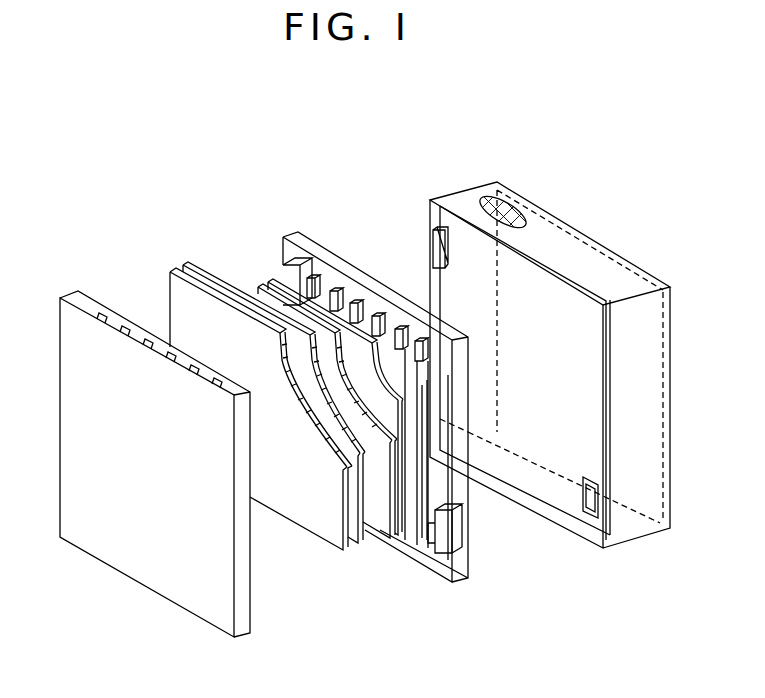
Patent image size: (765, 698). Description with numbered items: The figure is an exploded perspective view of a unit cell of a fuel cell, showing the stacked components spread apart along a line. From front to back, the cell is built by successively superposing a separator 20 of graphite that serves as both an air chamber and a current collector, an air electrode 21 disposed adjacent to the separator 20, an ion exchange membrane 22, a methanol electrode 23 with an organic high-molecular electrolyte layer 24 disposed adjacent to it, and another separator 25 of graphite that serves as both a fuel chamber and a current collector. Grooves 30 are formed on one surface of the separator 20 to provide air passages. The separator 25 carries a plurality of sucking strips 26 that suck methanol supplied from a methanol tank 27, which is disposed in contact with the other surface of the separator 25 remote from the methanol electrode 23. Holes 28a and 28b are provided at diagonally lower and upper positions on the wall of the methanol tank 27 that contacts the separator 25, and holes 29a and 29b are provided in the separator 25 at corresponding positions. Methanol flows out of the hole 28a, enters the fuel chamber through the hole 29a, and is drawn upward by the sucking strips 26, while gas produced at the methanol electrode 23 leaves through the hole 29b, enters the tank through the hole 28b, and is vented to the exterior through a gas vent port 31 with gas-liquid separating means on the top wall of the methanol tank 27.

The separator 20 is at (62, 297).
The air electrode 21 is at (168, 272).
The ion exchange membrane 22 is at (185, 263).
The methanol electrode 23 is at (258, 286).
The organic high-molecular electrolyte layer 24 is at (268, 282).
The separator 25 is at (320, 247).
The sucking strips 26 is at (422, 535).
The methanol tank 27 is at (605, 248).
The hole 28a is at (588, 515).
The hole 28b is at (432, 246).
The hole 29a is at (445, 555).
The hole 29b is at (290, 268).
The grooves 30 is at (102, 312).
The gas vent port 31 is at (487, 197).